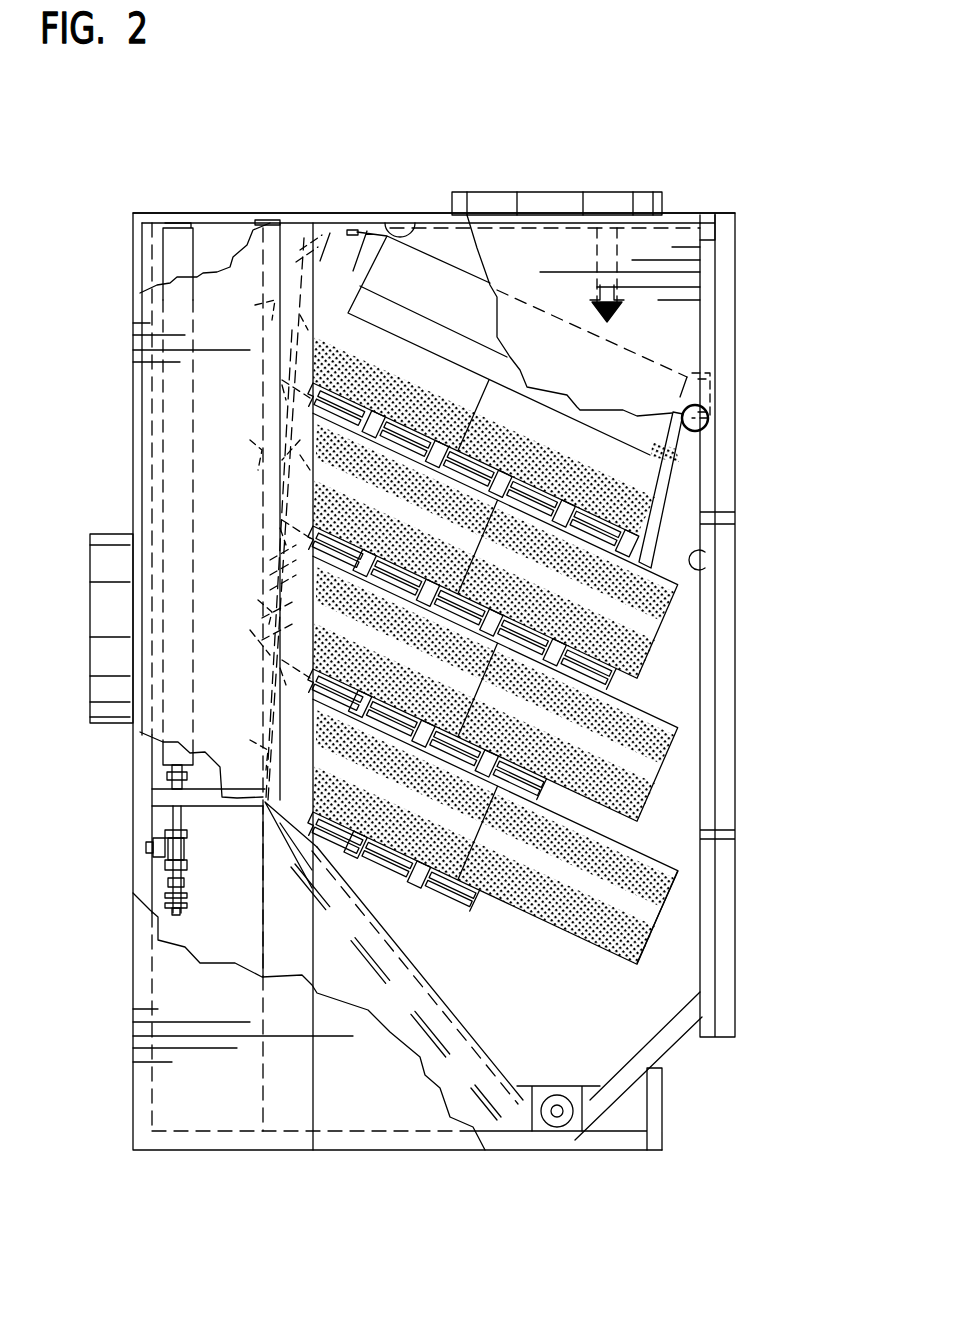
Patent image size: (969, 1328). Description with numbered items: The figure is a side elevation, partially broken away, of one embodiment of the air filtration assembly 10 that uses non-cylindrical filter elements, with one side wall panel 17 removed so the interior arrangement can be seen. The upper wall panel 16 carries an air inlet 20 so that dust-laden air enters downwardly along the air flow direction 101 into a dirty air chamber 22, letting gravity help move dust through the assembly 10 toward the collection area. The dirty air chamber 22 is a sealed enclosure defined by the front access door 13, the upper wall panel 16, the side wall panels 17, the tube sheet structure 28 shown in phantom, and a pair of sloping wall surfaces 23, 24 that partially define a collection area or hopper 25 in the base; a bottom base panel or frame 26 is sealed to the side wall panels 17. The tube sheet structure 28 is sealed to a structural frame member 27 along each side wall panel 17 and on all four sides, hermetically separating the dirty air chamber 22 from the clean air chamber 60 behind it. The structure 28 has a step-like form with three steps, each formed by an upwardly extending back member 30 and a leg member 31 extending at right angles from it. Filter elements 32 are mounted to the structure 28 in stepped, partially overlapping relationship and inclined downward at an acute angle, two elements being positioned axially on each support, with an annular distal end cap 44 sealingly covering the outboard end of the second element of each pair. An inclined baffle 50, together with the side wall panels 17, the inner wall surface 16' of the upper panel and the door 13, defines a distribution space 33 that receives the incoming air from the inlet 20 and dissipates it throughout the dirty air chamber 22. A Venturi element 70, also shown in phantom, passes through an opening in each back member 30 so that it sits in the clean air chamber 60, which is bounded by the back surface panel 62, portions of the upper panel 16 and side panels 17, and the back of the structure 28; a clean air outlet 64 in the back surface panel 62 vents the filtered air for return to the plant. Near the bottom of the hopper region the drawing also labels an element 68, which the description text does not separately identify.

The air filtration assembly 10 is at (523, 155).
The front access door 13 is at (737, 250).
The upper wall panel 16 is at (421, 174).
The inner wall surface 16' is at (485, 303).
The side wall panel 17 is at (262, 222).
The air inlet 20 is at (562, 195).
The dirty air chamber 22 is at (707, 570).
The sloping wall surface 23 is at (650, 1053).
The sloping wall surface 24 is at (491, 1057).
The collection area or hopper 25 is at (613, 1055).
The bottom base panel or frame 26 is at (263, 1143).
The structural frame member 27 is at (283, 910).
The tube sheet structure 28 is at (293, 317).
The back member 30 is at (263, 629).
The leg member 31 is at (288, 394).
The filter element 32 is at (640, 620).
The distribution space 33 is at (690, 233).
The annular distal end cap 44 is at (663, 907).
The inclined baffle 50 is at (624, 349).
The clean air chamber 60 is at (182, 376).
The back surface panel 62 is at (133, 441).
The clean air outlet 64 is at (117, 695).
The pulley 68 is at (548, 1128).
The Venturi element 70 is at (256, 583).
The air flow direction 101 is at (624, 240).